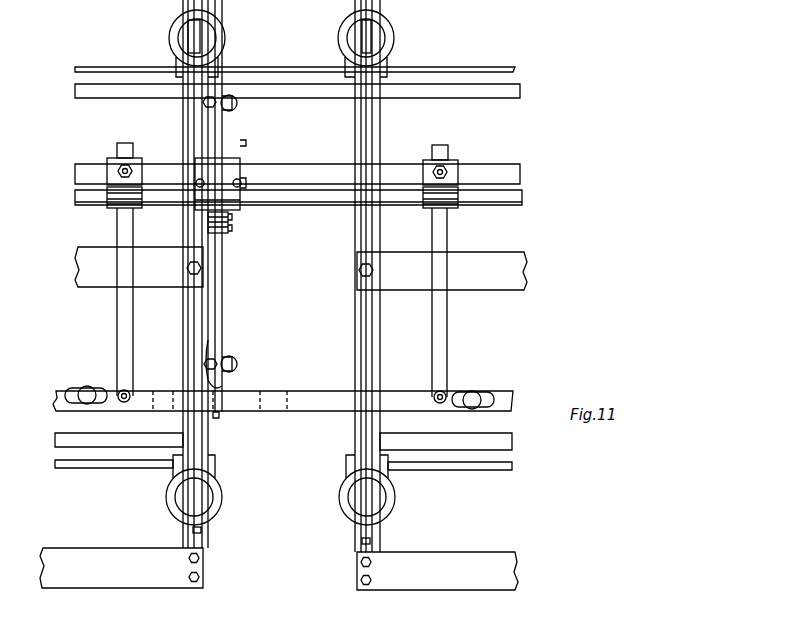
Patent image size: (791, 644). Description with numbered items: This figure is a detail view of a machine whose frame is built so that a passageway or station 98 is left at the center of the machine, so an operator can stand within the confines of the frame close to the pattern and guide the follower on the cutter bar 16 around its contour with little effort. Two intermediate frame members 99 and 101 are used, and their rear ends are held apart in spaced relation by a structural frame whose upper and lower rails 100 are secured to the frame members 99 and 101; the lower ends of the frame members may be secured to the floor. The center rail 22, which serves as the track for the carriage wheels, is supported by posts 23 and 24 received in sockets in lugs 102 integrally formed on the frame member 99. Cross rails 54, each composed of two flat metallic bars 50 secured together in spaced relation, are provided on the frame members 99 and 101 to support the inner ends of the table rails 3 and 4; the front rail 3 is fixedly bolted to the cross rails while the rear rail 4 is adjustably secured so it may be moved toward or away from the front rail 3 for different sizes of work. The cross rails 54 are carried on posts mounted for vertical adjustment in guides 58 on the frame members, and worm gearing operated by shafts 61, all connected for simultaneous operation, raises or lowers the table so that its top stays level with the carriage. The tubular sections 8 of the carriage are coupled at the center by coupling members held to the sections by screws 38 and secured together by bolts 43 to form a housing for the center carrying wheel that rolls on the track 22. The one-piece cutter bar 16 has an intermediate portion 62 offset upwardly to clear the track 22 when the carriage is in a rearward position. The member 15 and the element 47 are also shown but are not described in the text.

The front rail 3 is at (68, 557).
The rear rail 4 is at (78, 256).
The tubular sections 8 is at (82, 166).
The link arm 15 is at (445, 333).
The cutter bar 16 is at (342, 410).
The center rail 22 is at (222, 316).
The post 23 is at (229, 357).
The post 24 is at (218, 100).
The screws 38 is at (196, 182).
The bolts 43 is at (232, 228).
The adjusting nut 47 is at (233, 241).
The flat metallic bars 50 is at (192, 530).
The cross rails 54 is at (213, 543).
The guides 58 is at (178, 40).
The shafts 61 is at (99, 67).
The intermediate portion 62 is at (258, 420).
The passageway or station 98 is at (299, 603).
The intermediate frame member 99 is at (183, 336).
The upper and lower rails 100 is at (325, 98).
The intermediate frame member 101 is at (378, 352).
The lugs 102 is at (236, 106).